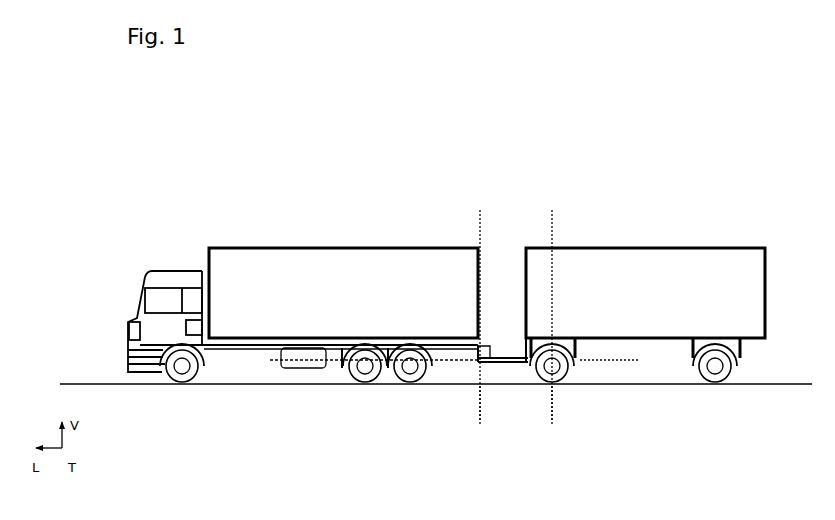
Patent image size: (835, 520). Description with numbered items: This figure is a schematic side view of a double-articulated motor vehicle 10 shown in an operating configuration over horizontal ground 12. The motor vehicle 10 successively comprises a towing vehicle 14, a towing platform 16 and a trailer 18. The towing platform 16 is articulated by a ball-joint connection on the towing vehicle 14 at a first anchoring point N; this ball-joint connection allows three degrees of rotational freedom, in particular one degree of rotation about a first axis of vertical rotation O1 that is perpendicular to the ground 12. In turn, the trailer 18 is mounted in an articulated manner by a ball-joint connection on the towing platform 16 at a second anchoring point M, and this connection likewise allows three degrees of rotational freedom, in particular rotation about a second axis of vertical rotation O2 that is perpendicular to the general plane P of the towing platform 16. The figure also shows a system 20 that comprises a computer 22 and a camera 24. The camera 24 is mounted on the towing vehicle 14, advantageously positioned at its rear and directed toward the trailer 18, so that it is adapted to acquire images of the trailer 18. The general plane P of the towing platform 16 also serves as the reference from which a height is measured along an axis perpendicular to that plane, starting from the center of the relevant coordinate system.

The motor vehicle 10 is at (320, 222).
The ground 12 is at (100, 383).
The towing vehicle 14 is at (250, 242).
The towing platform 16 is at (499, 374).
The trailer 18 is at (720, 236).
The system 20 is at (233, 376).
The computer 22 is at (185, 385).
The camera 24 is at (488, 304).
The first axis of vertical rotation O1 is at (478, 226).
The second axis of vertical rotation O2 is at (554, 228).
The first anchoring point N is at (479, 362).
The second anchoring point M is at (553, 386).
The general plane of the towing platform P is at (638, 360).